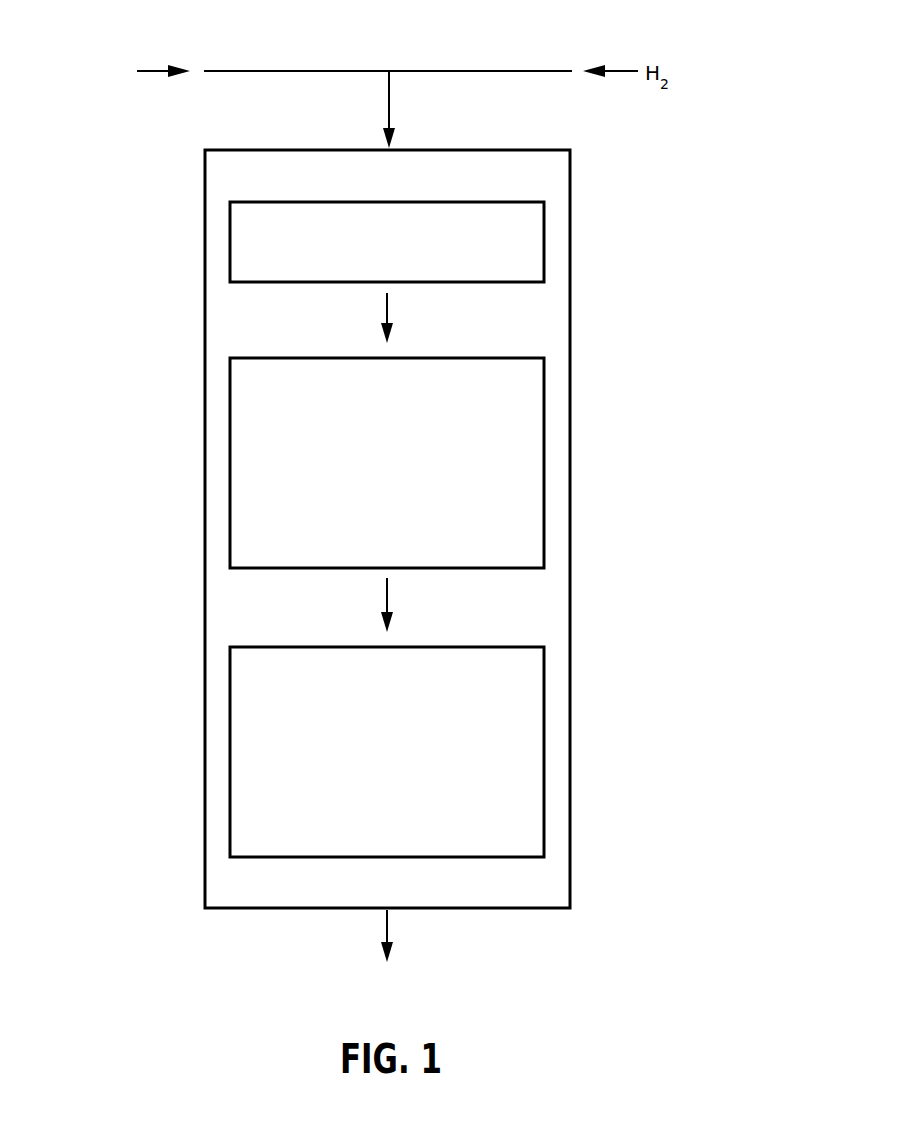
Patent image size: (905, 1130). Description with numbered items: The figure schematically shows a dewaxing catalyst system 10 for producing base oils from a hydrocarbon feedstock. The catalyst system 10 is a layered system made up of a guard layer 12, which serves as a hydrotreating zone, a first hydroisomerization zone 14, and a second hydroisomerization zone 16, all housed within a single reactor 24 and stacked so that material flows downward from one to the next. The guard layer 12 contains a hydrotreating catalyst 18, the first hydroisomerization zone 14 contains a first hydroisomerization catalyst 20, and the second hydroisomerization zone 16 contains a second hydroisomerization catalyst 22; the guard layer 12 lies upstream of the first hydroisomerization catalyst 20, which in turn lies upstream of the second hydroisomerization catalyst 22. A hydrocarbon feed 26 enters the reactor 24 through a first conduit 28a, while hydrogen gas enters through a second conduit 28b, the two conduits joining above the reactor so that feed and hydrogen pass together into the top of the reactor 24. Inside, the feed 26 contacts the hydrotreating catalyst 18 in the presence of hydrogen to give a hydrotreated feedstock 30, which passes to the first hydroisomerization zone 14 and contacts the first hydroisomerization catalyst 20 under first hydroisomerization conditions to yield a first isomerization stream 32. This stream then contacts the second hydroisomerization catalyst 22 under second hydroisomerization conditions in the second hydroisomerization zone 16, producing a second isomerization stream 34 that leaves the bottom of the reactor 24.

The dewaxing catalyst system 10 is at (752, 727).
The guard layer 12 is at (473, 242).
The first hydroisomerization zone 14 is at (473, 463).
The second hydroisomerization zone 16 is at (481, 752).
The hydrotreating catalyst 18 is at (375, 246).
The first hydroisomerization catalyst 20 is at (375, 476).
The second hydroisomerization catalyst 22 is at (385, 758).
The reactor 24 is at (203, 580).
The hydrocarbon feed 26 is at (151, 71).
The first conduit 28a is at (311, 71).
The second conduit 28b is at (468, 71).
The hydrotreated feedstock 30 is at (404, 318).
The first isomerization stream 32 is at (404, 605).
The second isomerization stream 34 is at (404, 936).